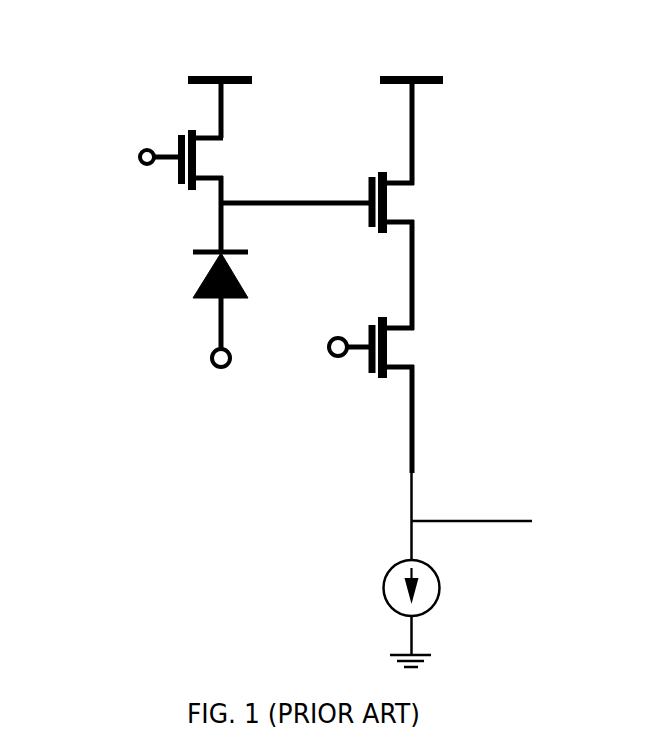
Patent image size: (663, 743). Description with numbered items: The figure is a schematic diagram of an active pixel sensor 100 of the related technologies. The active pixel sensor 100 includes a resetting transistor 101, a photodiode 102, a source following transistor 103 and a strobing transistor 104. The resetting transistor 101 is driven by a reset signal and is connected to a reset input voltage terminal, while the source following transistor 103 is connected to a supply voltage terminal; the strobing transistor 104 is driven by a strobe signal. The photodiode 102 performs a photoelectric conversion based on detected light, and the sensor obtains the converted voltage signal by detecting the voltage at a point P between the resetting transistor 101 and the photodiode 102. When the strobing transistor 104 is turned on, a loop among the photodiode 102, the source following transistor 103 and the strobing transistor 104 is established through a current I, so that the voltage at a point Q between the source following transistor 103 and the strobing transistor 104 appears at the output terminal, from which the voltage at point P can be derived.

The active pixel sensor 100 is at (306, 30).
The resetting transistor 101 is at (176, 172).
The photodiode 102 is at (196, 292).
The source following transistor 103 is at (368, 220).
The strobing transistor 104 is at (368, 365).